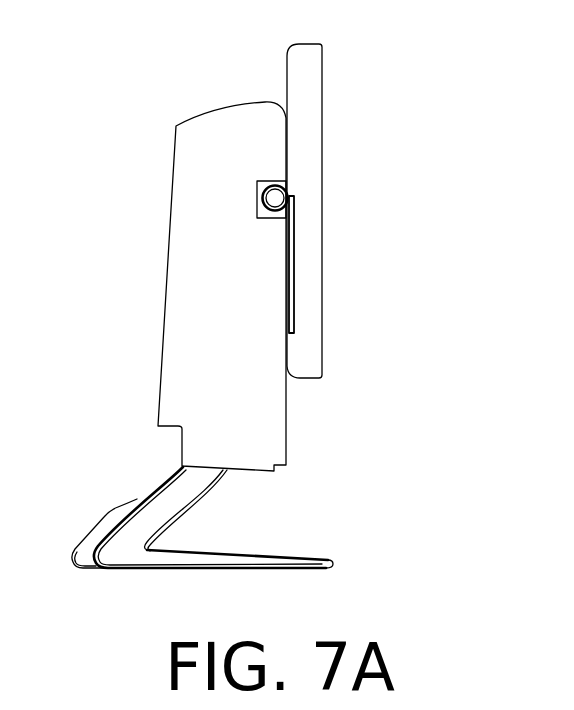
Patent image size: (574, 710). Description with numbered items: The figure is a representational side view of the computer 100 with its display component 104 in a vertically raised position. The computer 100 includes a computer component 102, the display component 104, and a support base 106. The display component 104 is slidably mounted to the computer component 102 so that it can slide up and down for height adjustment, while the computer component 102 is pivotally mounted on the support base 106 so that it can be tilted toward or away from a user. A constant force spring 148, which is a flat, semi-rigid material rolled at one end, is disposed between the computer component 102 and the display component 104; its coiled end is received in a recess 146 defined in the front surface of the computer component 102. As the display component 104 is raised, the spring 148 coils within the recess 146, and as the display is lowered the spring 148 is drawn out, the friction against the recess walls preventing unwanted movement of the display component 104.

The computer 100 is at (388, 113).
The computer component 102 is at (185, 190).
The display component 104 is at (317, 203).
The support base 106 is at (143, 510).
The recess 146 is at (281, 186).
The constant force spring 148 is at (295, 288).